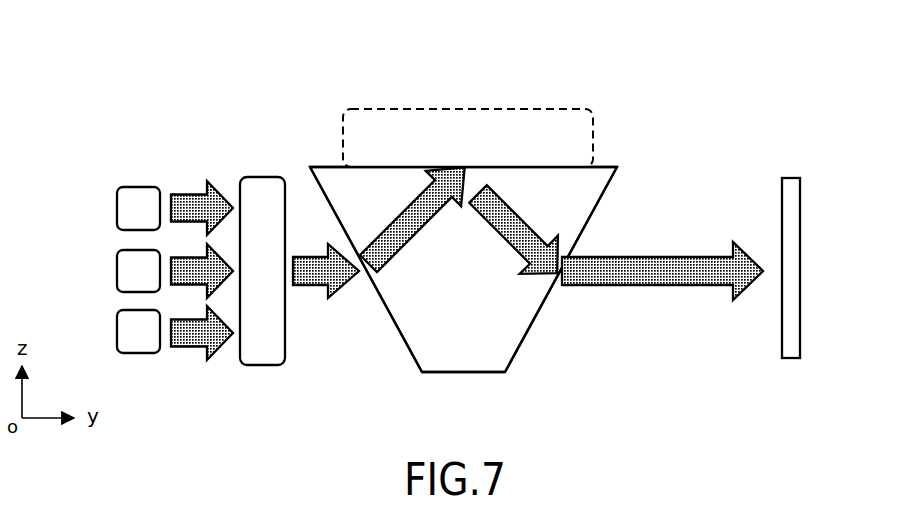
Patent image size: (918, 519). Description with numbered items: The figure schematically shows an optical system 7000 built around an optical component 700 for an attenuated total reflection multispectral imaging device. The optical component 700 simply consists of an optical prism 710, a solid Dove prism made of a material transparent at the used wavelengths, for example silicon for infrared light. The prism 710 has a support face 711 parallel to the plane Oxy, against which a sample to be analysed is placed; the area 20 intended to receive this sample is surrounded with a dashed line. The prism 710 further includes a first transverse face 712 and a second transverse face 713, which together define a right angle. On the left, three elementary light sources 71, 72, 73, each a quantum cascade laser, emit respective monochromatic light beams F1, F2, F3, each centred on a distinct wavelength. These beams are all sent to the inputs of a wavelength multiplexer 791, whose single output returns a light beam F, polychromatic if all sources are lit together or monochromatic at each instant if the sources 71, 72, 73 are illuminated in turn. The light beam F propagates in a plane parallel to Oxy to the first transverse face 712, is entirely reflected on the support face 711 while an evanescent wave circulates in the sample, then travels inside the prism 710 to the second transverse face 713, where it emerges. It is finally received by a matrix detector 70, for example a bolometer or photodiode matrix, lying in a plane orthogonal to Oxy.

The optical system 7000 is at (184, 77).
The elementary light source 73 is at (127, 200).
The elementary light source 72 is at (127, 273).
The elementary light source 71 is at (127, 335).
The wavelength multiplexer 791 is at (263, 185).
The light beam F is at (310, 275).
The light beam F1 is at (188, 337).
The light beam F2 is at (185, 264).
The light beam F3 is at (192, 203).
The optical component 700 is at (610, 146).
The optical prism 710 is at (455, 360).
The support face 711 is at (543, 167).
The first transverse face 712 is at (402, 338).
The second transverse face 713 is at (515, 352).
The area intended to receive the sample 20 is at (402, 110).
The matrix detector 70 is at (792, 185).